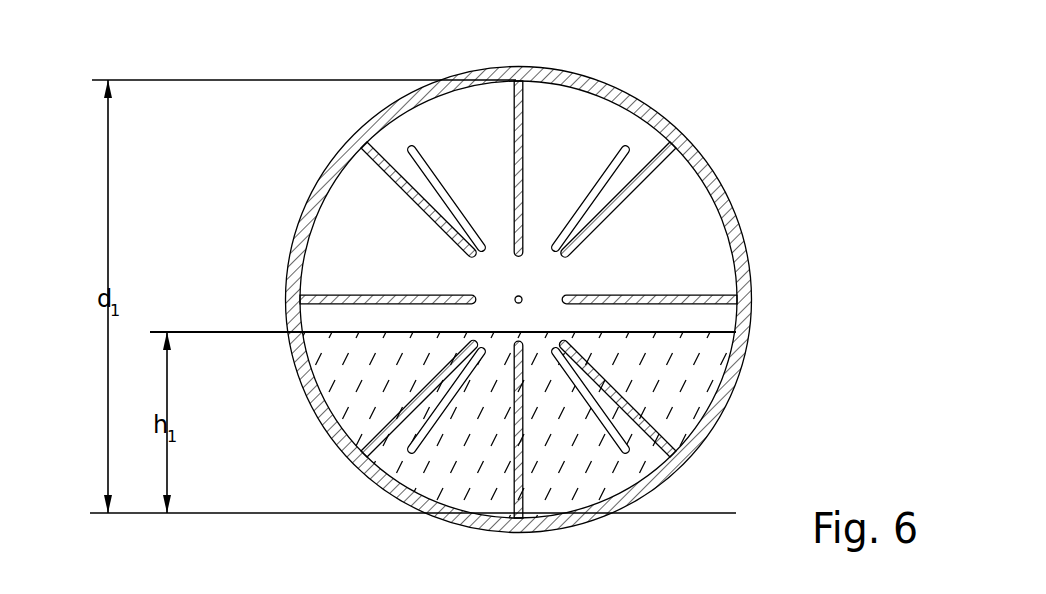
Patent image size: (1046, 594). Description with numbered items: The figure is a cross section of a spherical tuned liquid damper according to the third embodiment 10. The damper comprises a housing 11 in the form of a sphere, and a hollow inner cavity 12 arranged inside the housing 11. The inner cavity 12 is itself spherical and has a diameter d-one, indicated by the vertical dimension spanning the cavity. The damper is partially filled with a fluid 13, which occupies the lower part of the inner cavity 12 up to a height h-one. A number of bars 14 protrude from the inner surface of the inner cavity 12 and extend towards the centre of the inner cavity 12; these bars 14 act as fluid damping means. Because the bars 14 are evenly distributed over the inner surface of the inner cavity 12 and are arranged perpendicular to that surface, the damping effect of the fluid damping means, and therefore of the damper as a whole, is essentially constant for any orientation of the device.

The third embodiment 10 is at (508, 274).
The housing 11 is at (750, 238).
The inner cavity 12 is at (600, 100).
The fluid 13 is at (709, 342).
The bars 14 is at (528, 99).